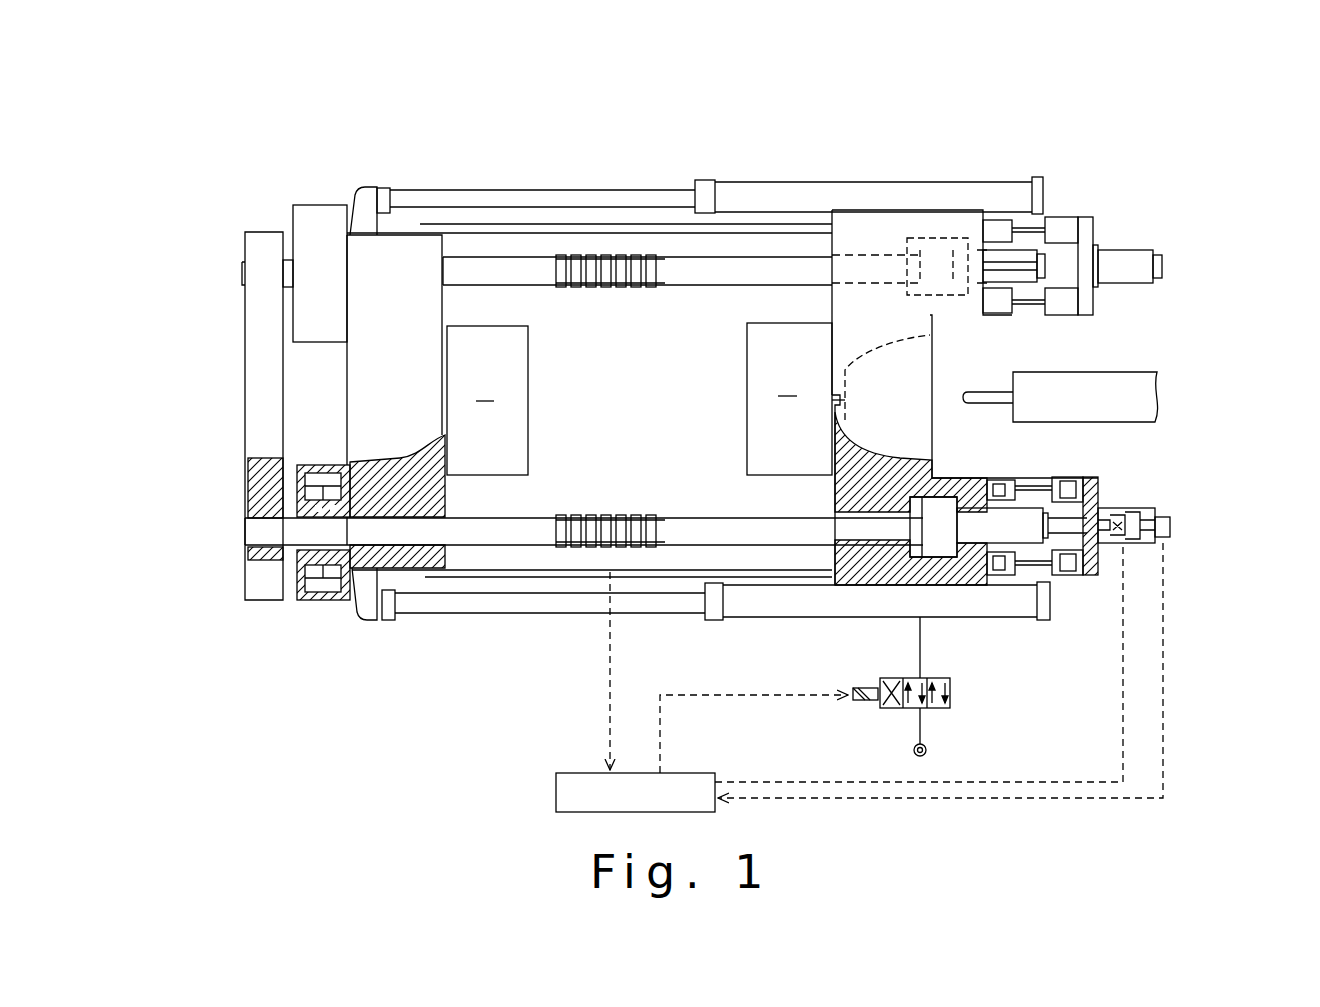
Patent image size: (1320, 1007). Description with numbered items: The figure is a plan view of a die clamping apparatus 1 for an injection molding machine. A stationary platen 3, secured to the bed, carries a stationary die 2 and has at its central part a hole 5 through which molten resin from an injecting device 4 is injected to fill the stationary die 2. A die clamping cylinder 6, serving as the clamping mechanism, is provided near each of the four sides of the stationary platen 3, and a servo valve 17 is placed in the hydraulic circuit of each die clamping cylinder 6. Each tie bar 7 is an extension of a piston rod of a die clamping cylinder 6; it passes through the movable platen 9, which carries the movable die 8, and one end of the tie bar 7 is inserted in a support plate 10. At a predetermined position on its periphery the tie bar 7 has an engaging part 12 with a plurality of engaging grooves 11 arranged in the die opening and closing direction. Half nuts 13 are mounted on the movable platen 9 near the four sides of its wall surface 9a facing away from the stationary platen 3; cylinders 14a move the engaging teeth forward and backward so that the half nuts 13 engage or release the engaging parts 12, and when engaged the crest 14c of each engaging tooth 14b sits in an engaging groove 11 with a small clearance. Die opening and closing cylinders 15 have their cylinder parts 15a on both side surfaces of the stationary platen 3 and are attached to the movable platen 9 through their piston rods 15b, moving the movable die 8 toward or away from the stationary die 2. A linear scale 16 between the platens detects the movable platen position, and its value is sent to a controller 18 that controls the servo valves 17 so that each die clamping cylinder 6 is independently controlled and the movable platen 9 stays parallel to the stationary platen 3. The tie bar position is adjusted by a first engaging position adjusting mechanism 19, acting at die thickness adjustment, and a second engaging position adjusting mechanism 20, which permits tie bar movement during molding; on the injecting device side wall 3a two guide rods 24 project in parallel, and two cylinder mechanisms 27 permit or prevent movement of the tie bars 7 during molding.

The die clamping apparatus 1 is at (772, 143).
The stationary die 2 is at (789, 399).
The stationary platen 3 is at (898, 462).
The injecting device side wall 3a is at (1013, 313).
The injecting device 4 is at (1098, 387).
The hole 5 is at (835, 398).
The die clamping cylinder 6 is at (937, 230).
The tie bar 7 is at (510, 257).
The movable die 8 is at (437, 401).
The movable platen 9 is at (375, 305).
The wall surface 9a is at (345, 378).
The support plate 10 is at (258, 232).
The engaging groove 11 is at (590, 257).
The engaging part 12 is at (637, 253).
The half nut 13 is at (295, 487).
The cylinder 14a is at (323, 473).
The engaging tooth 14b is at (250, 553).
The crest 14c is at (330, 513).
The die opening/closing cylinder 15 is at (737, 190).
The cylinder part 15a is at (952, 208).
The piston rod 15b is at (455, 188).
The linear scale 16 is at (780, 225).
The servo valve 17 is at (890, 712).
The controller 18 is at (556, 790).
The first engaging position adjusting mechanism 19 is at (1132, 241).
The second engaging position adjusting mechanism 20 is at (1062, 206).
The guide rod 24 is at (1020, 265).
The cylinder mechanism 27 is at (1027, 575).